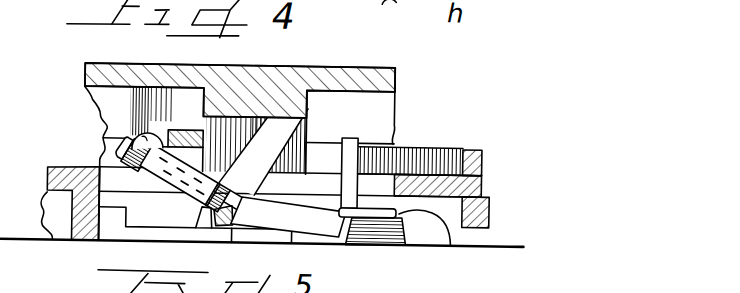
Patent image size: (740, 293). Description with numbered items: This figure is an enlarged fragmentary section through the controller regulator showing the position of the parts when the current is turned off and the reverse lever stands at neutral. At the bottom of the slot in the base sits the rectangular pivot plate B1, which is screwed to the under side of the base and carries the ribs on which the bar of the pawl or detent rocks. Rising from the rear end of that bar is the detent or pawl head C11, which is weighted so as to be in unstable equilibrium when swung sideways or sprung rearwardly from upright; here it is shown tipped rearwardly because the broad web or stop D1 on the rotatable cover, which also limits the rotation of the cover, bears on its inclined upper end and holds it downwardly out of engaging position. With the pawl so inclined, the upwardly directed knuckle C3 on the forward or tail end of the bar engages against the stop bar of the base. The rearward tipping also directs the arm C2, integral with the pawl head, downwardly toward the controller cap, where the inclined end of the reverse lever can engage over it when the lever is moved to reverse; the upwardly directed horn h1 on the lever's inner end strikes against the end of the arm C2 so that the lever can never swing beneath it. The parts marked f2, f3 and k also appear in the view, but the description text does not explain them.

The pivot plate B1 is at (154, 238).
The knuckle C3 is at (100, 147).
The spring block f2 is at (200, 148).
The detent or pawl head C11 is at (277, 135).
The web or stop D1 is at (243, 110).
The stop block f3 is at (482, 148).
The arm C2 is at (336, 241).
The horn or arm h1 is at (350, 154).
The curved guide k is at (437, 234).